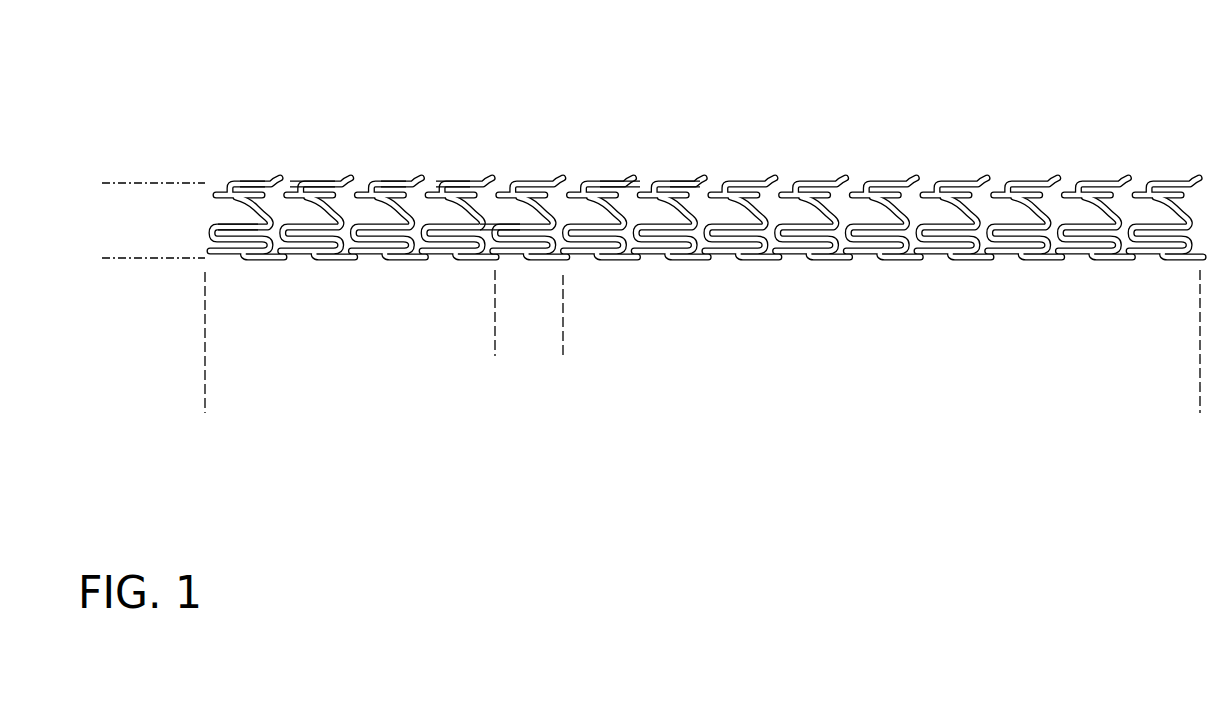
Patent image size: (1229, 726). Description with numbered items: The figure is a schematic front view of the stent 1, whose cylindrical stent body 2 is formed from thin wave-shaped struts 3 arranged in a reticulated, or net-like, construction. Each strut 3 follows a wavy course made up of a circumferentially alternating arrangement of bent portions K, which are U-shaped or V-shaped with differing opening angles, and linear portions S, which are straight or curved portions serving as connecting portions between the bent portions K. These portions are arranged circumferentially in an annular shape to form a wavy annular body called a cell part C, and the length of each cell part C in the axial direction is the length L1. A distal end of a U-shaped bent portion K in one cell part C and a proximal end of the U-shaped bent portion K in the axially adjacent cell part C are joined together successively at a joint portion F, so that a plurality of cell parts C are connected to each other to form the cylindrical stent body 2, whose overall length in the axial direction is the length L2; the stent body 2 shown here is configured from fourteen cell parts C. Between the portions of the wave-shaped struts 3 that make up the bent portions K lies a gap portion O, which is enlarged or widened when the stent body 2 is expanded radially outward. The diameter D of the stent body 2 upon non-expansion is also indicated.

The stent 1 is at (642, 223).
The stent body 2 is at (353, 187).
The struts 3 is at (616, 176).
The linear portion S is at (253, 205).
The bent portion K is at (340, 205).
The joint portion F is at (420, 220).
The gap portion O is at (221, 240).
The cell part C is at (278, 268).
The diameter of the stent body D is at (111, 183).
The length of each cell part L1 is at (445, 347).
The length of the stent body L2 is at (1199, 408).